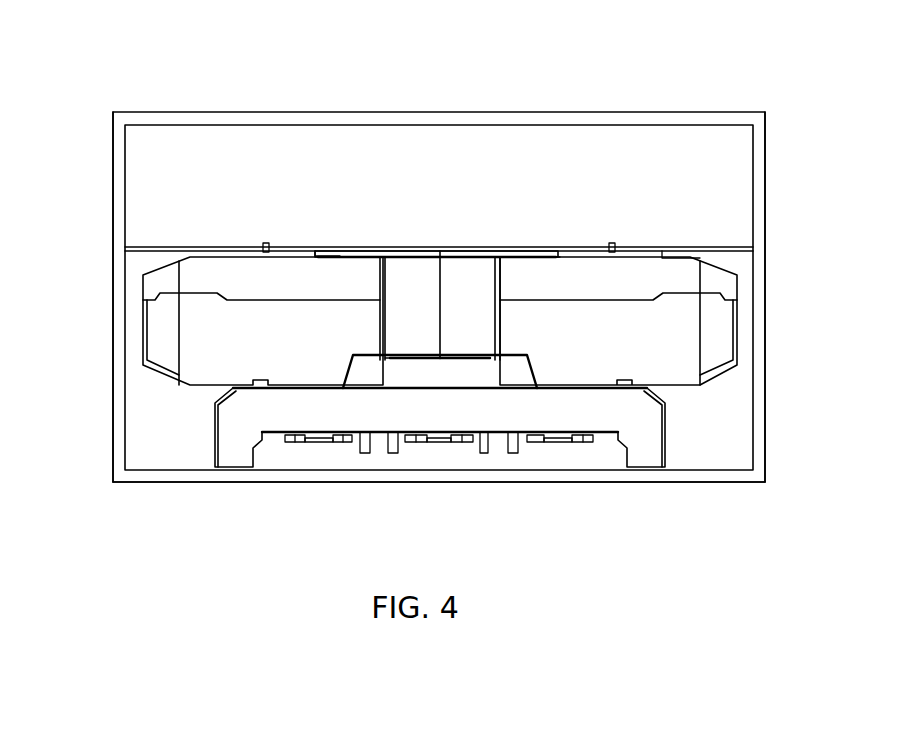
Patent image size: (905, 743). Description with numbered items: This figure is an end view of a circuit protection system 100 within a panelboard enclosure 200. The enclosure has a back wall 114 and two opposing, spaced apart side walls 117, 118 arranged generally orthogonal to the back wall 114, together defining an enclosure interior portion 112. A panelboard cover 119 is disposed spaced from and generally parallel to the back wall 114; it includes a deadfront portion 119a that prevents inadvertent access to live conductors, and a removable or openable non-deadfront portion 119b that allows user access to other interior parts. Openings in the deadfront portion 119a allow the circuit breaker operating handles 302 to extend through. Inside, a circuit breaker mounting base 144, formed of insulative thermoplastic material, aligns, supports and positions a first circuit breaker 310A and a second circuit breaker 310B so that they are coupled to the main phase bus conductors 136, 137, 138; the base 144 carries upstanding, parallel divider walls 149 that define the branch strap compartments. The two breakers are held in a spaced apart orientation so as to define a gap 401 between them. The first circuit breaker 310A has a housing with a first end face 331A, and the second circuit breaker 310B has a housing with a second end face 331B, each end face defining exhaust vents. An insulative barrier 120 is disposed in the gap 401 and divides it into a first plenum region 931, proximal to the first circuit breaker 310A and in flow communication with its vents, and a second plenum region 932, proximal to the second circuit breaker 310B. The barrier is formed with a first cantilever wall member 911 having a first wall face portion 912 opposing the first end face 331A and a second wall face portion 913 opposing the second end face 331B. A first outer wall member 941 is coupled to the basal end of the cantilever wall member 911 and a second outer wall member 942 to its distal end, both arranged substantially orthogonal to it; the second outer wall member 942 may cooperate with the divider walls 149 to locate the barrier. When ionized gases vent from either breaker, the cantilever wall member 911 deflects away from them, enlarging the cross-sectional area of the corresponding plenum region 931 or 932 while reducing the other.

The electronic device assembly 100 is at (213, 44).
The housing 200 is at (107, 134).
The panelboard cover 119 is at (675, 112).
The deadfront portion 119a is at (343, 250).
The non-deadfront portion 119b is at (700, 252).
The insulative barrier 120 is at (474, 240).
The circuit breaker operating handles 302 is at (265, 242).
The gap 401 is at (432, 233).
The second wall face portion 913 is at (443, 281).
The first plenum region 931 is at (456, 289).
The second plenum region 932 is at (430, 330).
The first outer wall member 941 is at (543, 261).
The second outer wall member 942 is at (398, 360).
The first cantilever wall member 911 is at (457, 303).
The first wall face portion 912 is at (443, 326).
The first circuit breaker 310A is at (609, 345).
The second circuit breaker 310B is at (222, 345).
The first end face 331A is at (500, 338).
The second end face 331B is at (378, 290).
The divider walls 149 is at (440, 385).
The circuit breaker mounting base 144 is at (462, 425).
The phase bus conductor 136 is at (310, 445).
The phase bus conductor 137 is at (425, 445).
The phase bus conductor 138 is at (540, 445).
The enclosure interior portion 112 is at (755, 412).
The back wall 114 is at (703, 484).
The side wall 117 is at (110, 298).
The side wall 118 is at (757, 302).